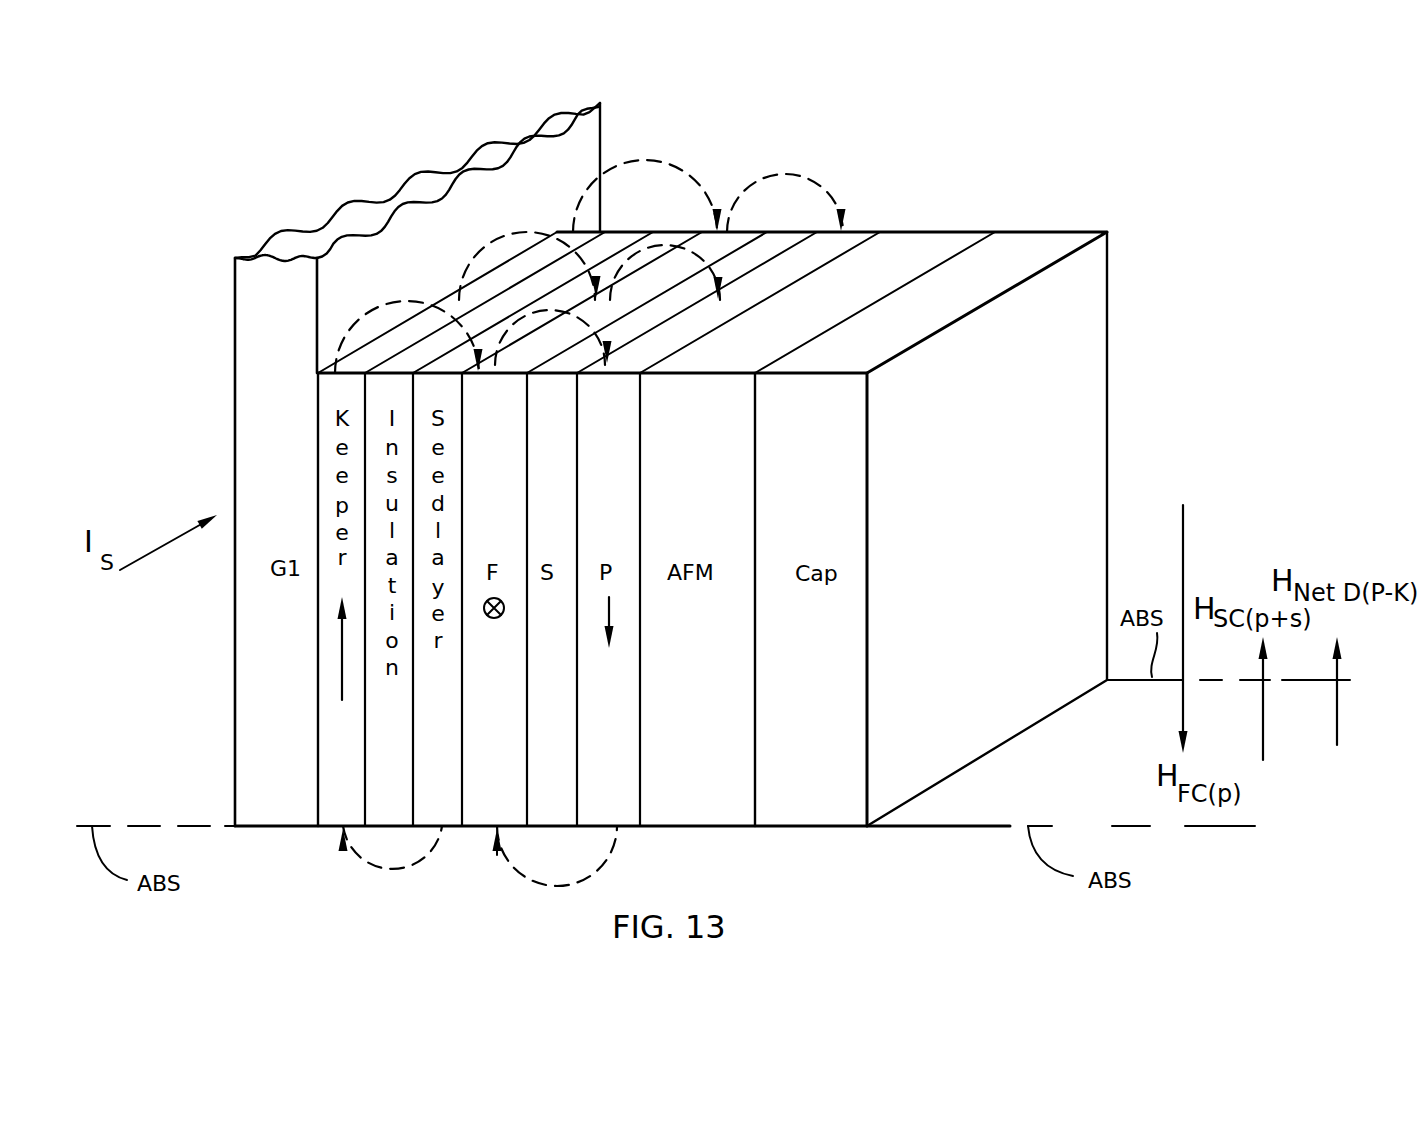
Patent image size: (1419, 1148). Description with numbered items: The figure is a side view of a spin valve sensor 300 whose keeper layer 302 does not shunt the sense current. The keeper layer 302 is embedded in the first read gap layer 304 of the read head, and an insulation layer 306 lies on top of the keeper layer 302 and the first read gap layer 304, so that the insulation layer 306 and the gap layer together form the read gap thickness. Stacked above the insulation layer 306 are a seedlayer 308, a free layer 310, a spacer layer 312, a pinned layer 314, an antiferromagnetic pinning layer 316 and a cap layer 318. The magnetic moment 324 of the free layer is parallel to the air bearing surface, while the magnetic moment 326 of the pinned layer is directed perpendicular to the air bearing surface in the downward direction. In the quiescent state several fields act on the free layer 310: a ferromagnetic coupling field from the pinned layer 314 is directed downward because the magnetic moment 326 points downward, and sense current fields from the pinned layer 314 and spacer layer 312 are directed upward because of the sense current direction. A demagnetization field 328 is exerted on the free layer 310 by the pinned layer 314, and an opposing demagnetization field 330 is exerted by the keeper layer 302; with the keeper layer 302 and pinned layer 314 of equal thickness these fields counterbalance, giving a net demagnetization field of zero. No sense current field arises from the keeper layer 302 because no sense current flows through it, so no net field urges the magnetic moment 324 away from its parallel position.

The spin valve sensor 300 is at (1120, 190).
The keeper layer 302 is at (348, 728).
The first read gap layer 304 is at (280, 794).
The insulation layer 306 is at (378, 775).
The seedlayer 308 is at (440, 758).
The free layer 310 is at (500, 723).
The spacer layer 312 is at (553, 689).
The pinned layer 314 is at (607, 782).
The antiferromagnetic pinning layer 316 is at (687, 800).
The cap layer 318 is at (812, 795).
The magnetic moment of the free layer 324 is at (497, 600).
The magnetic moment of the pinned layer 326 is at (612, 614).
The demagnetization field 328 is at (517, 885).
The demagnetization field 330 is at (365, 877).